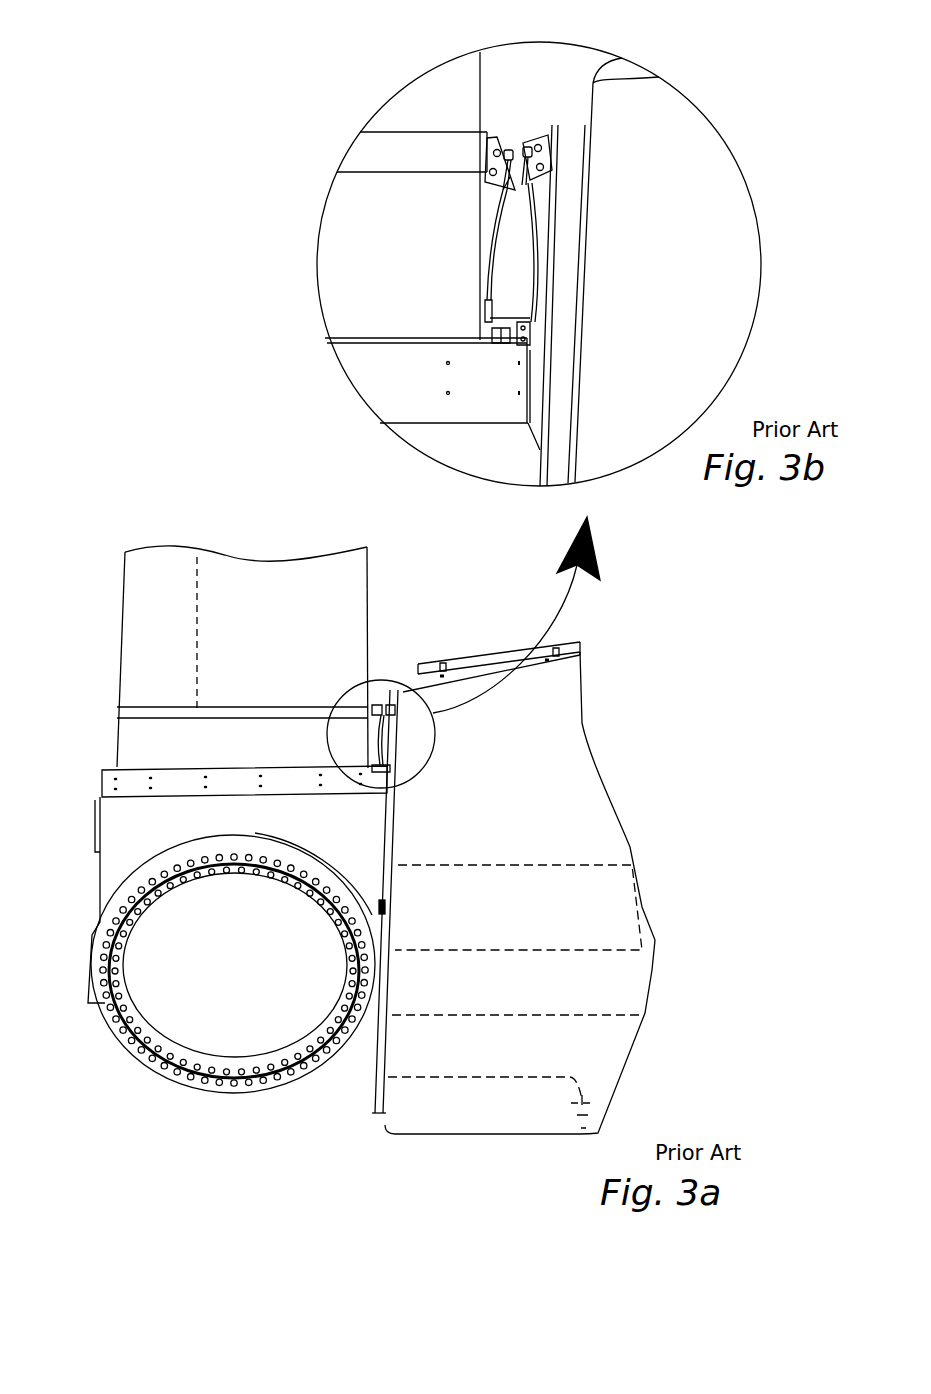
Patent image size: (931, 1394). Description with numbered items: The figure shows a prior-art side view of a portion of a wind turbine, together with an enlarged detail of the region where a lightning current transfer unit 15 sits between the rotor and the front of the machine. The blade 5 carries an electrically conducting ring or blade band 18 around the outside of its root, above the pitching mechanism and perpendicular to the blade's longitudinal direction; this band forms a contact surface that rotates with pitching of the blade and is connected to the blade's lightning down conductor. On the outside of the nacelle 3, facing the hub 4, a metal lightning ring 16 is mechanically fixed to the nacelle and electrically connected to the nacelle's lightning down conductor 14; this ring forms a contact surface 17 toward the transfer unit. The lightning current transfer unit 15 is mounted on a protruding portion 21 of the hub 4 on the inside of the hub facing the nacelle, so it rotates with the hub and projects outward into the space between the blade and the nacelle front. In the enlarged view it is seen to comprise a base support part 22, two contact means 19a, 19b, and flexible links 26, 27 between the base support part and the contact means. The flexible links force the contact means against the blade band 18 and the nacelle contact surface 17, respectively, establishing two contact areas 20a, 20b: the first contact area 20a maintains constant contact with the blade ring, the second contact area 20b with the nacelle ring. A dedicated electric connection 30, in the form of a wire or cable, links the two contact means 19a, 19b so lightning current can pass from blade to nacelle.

In FIG. 3A, the nacelle 3 is at (605, 748).
In FIG. 3B, the nacelle 3 is at (637, 100).
In FIG. 3A, the hub 4 is at (205, 1098).
In FIG. 3A, the blade 5 is at (170, 532).
In FIG. 3B, the blade 5 is at (453, 84).
In FIG. 3A, the lightning down conductor 14 is at (580, 1083).
In FIG. 3A, the lightning current transfer unit 15 is at (390, 673).
In FIG. 3B, the lightning current transfer unit 15 is at (620, 18).
In FIG. 3A, the lightning ring 16 is at (373, 1100).
In FIG. 3B, the lightning ring 16 is at (572, 223).
In FIG. 3B, the contact surface 17 is at (540, 413).
In FIG. 3A, the blade band 18 is at (158, 710).
In FIG. 3B, the blade band 18 is at (373, 153).
In FIG. 3B, the first contact means 19a is at (492, 152).
In FIG. 3B, the second contact means 19b is at (560, 143).
In FIG. 3B, the first contact area 20a is at (495, 135).
In FIG. 3B, the second contact area 20b is at (550, 113).
In FIG. 3B, the protruding portion 21 is at (360, 375).
In FIG. 3B, the base support part 22 is at (530, 345).
In FIG. 3B, the first flexible link 26 is at (483, 262).
In FIG. 3B, the second flexible link 27 is at (537, 263).
In FIG. 3B, the electric connection 30 is at (487, 237).